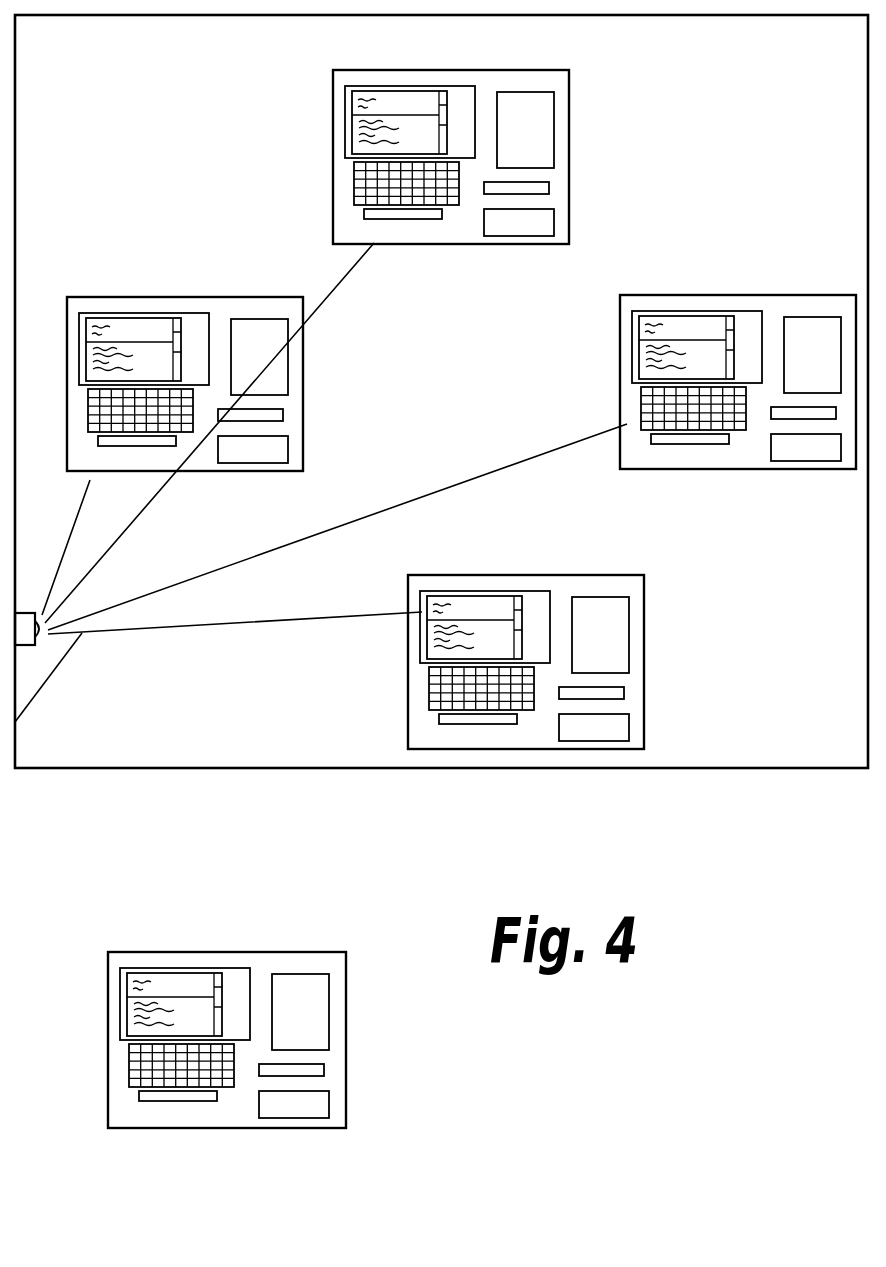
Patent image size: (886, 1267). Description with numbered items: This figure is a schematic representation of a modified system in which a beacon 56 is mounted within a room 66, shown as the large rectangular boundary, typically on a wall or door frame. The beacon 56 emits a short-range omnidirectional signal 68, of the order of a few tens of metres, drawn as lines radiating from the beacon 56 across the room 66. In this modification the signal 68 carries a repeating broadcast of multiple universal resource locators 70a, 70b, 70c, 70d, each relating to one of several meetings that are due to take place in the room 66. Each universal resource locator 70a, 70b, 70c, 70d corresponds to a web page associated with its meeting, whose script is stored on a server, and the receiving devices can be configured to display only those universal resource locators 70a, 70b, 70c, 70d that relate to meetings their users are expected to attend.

The beacon 56 is at (26, 632).
The room 66 is at (229, 710).
The omnidirectional signal 68 is at (332, 438).
The universal resource locator 70a is at (362, 100).
The universal resource locator 70b is at (107, 320).
The universal resource locator 70c is at (657, 320).
The universal resource locator 70d is at (477, 605).